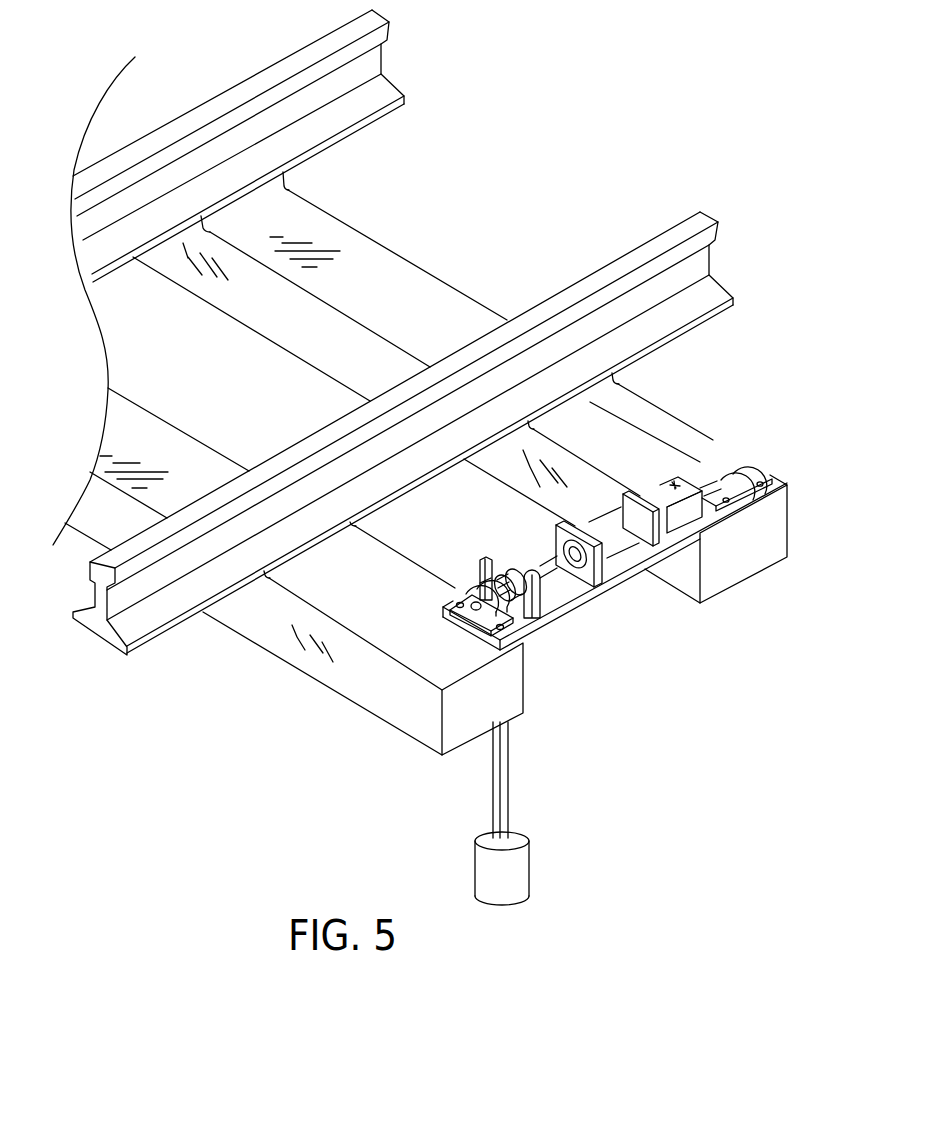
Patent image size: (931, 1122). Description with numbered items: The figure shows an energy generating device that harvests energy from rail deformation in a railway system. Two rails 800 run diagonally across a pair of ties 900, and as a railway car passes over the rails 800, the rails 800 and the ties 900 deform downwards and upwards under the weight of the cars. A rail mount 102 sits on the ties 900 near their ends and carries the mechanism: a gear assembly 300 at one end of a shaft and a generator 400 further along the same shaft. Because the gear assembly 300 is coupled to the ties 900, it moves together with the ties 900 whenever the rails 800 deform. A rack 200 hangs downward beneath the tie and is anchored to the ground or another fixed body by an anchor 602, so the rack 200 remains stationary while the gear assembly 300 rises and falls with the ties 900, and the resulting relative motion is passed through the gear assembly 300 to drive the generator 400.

The rails 800 is at (371, 55).
The ties 900 is at (152, 457).
The rail mount 102 is at (583, 592).
The gear assembly 300 is at (514, 574).
The generator 400 is at (610, 547).
The rack 200 is at (502, 777).
The anchor 602 is at (527, 870).